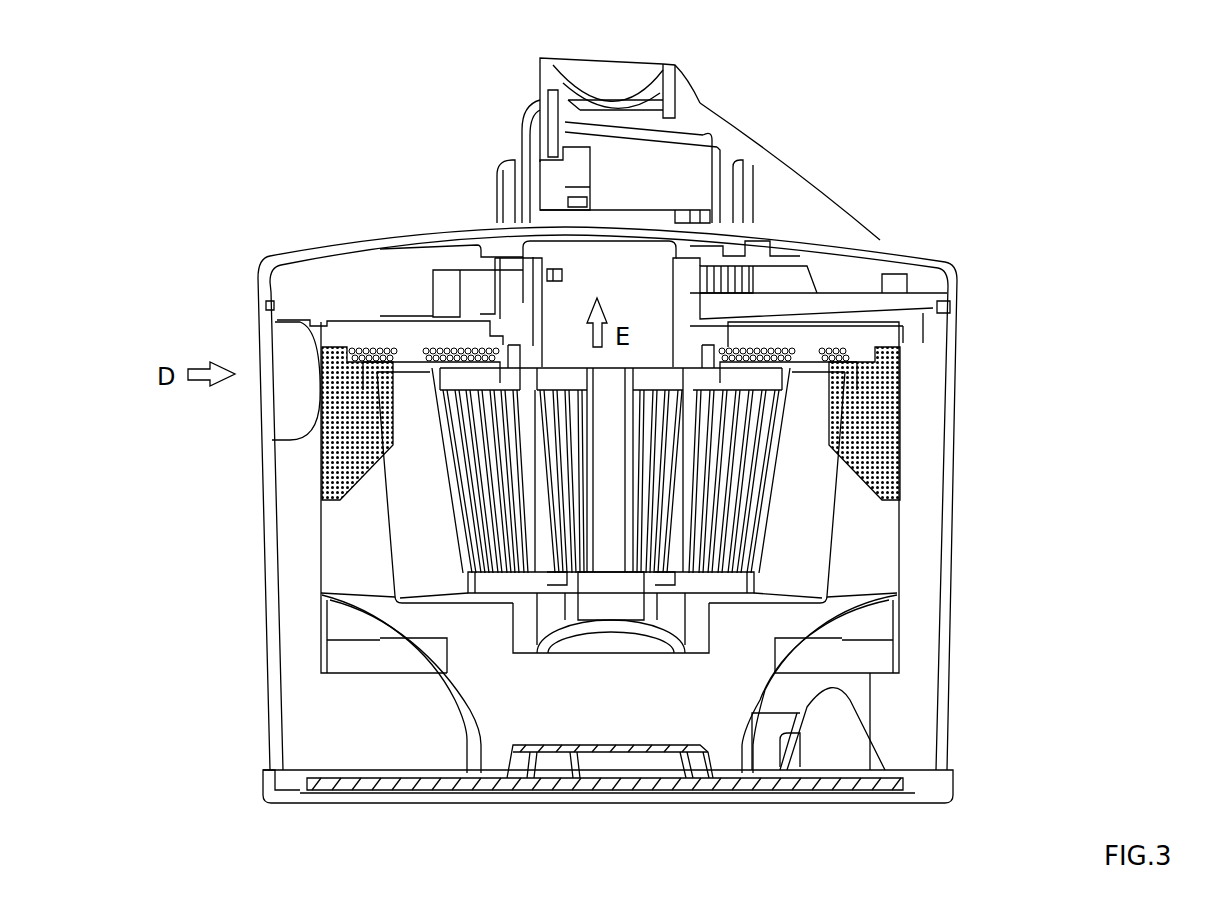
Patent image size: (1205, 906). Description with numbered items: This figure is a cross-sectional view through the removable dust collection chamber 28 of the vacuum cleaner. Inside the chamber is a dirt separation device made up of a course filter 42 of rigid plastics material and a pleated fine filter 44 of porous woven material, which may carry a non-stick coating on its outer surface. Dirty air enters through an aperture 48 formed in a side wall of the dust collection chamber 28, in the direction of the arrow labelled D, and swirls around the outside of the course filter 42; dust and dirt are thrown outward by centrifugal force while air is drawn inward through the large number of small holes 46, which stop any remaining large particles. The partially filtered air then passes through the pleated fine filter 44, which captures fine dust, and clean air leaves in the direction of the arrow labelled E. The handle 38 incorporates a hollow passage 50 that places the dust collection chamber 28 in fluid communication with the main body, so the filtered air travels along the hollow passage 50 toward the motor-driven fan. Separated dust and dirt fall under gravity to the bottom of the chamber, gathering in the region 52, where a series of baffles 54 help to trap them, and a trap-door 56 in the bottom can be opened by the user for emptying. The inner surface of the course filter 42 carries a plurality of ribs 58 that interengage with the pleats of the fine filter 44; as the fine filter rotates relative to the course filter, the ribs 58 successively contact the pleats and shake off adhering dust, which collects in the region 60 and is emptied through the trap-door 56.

The dust collection chamber 28 is at (272, 690).
The handle 38 is at (663, 83).
The course filter 42 is at (870, 640).
The pleated fine filter 44 is at (800, 407).
The small holes 46 is at (430, 357).
The aperture 48 is at (293, 402).
The hollow passage 50 is at (683, 165).
The dust and dirt collection region 52 is at (397, 737).
The baffles 54 is at (860, 742).
The trap-door 56 is at (490, 790).
The ribs 58 is at (350, 565).
The dislodged dust collection region 60 is at (680, 707).